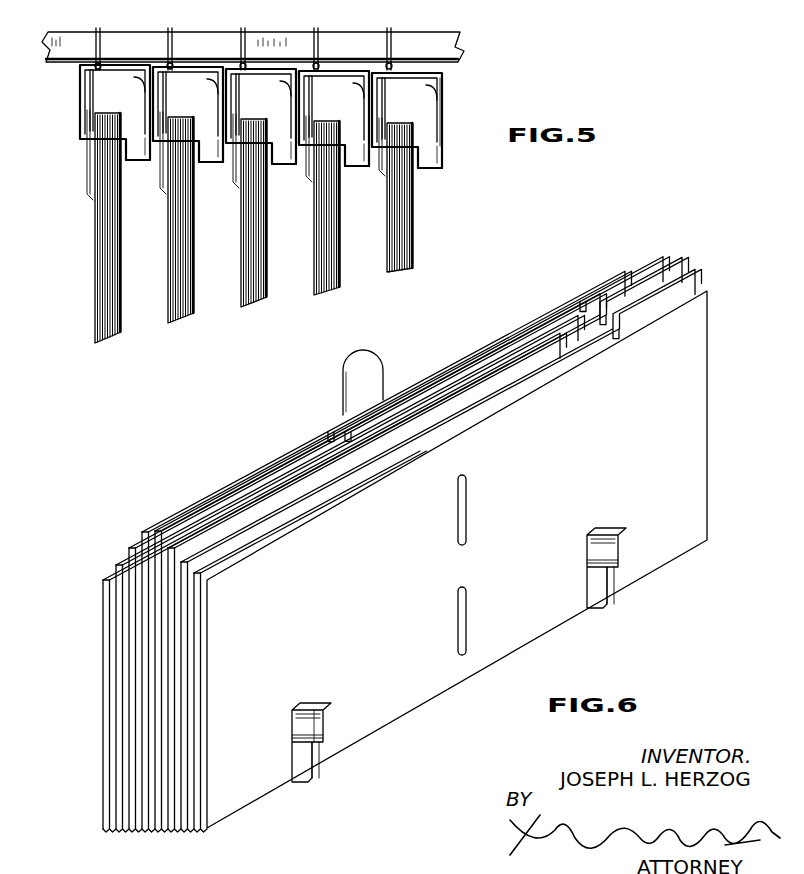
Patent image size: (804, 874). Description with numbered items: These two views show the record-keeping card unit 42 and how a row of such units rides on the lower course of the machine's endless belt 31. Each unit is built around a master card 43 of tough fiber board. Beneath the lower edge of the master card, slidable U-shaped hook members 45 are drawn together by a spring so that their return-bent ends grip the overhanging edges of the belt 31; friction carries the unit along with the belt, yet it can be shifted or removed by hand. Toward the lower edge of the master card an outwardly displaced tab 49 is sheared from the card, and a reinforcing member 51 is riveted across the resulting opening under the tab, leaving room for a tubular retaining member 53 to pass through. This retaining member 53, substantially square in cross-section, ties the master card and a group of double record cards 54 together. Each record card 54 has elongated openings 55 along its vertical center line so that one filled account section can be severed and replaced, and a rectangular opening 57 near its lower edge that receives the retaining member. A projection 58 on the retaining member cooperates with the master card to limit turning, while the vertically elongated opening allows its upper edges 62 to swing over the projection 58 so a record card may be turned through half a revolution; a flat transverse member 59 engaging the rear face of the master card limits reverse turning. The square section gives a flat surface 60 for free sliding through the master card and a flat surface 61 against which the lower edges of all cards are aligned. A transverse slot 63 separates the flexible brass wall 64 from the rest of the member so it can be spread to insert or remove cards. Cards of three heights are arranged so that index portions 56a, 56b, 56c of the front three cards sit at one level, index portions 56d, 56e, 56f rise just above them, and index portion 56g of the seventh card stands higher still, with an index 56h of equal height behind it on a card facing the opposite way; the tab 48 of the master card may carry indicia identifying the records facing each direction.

In FIG. 5, the belt 31 is at (458, 50).
In FIG. 6, the card unit 42 is at (382, 730).
In FIG. 5, the master card 43 is at (94, 299).
In FIG. 6, the master card 43 is at (100, 620).
In FIG. 5, the hook members 45 is at (166, 47).
In FIG. 6, the tab 48 is at (372, 368).
In FIG. 5, the outwardly displaced tab 49 is at (88, 172).
In FIG. 5, the member 51 is at (92, 160).
In FIG. 5, the tubular retaining member 53 is at (78, 119).
In FIG. 6, the tubular retaining member 53 is at (310, 779).
In FIG. 5, the record card 54 is at (126, 325).
In FIG. 6, the record card 54 is at (690, 377).
In FIG. 6, the elongated openings 55 is at (467, 540).
In FIG. 6, the index portion 56a is at (392, 472).
In FIG. 6, the index portion 56b is at (314, 512).
In FIG. 6, the index portion 56c is at (244, 552).
In FIG. 6, the index portion 56d is at (370, 462).
In FIG. 6, the index portion 56e is at (295, 478).
In FIG. 6, the index portion 56f is at (228, 535).
In FIG. 6, the index portion 56g is at (397, 418).
In FIG. 6, the index portion 56h is at (352, 432).
In FIG. 6, the rectangular opening 57 is at (295, 752).
In FIG. 5, the projection 58 is at (139, 158).
In FIG. 6, the projection 58 is at (322, 705).
In FIG. 5, the flat transverse member 59 is at (84, 96).
In FIG. 5, the flat surface 60 is at (229, 165).
In FIG. 5, the flat surface 61 is at (137, 77).
In FIG. 6, the upper edges 62 is at (306, 700).
In FIG. 5, the slot 63 is at (440, 150).
In FIG. 6, the slot 63 is at (323, 732).
In FIG. 6, the wall 64 is at (320, 772).